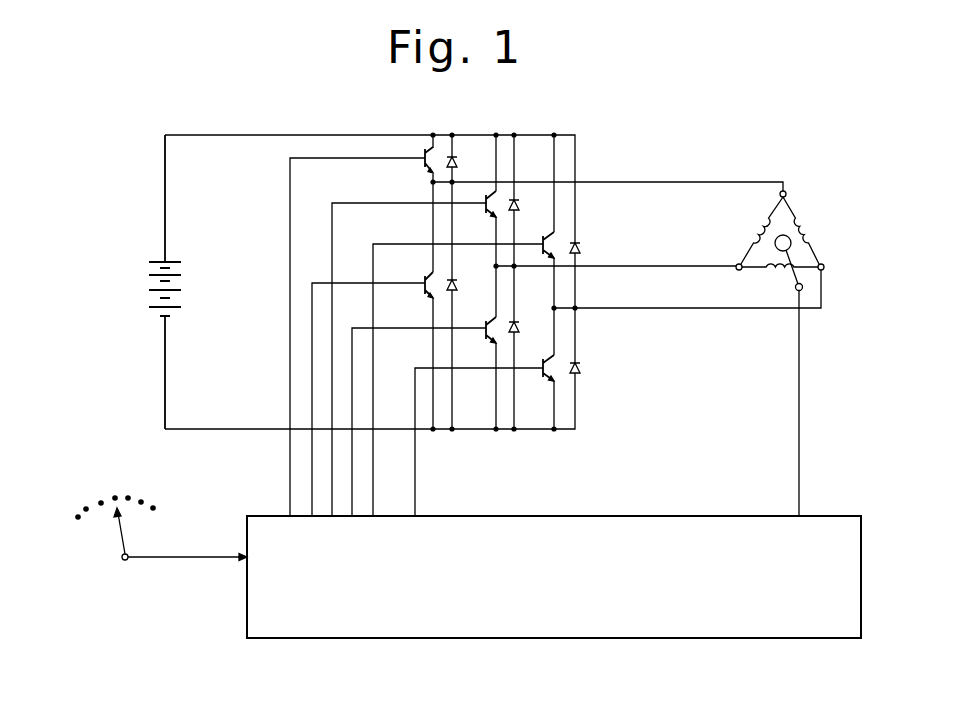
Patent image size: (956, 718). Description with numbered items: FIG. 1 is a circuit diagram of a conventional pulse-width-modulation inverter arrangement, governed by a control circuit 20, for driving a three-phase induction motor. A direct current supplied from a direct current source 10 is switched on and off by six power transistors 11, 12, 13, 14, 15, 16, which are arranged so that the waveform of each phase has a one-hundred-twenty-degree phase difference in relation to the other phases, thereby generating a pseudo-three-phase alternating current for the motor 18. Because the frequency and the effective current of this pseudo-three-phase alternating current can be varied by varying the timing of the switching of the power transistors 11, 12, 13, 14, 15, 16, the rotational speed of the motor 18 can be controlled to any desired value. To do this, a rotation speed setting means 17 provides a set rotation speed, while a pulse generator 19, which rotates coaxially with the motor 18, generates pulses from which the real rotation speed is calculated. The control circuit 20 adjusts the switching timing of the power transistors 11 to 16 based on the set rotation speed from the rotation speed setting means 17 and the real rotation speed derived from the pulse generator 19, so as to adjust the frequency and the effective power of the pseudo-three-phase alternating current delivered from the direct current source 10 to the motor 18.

The direct current source 10 is at (146, 266).
The power transistor 11 is at (423, 165).
The power transistor 12 is at (422, 280).
The power transistor 13 is at (486, 207).
The power transistor 14 is at (484, 322).
The power transistor 15 is at (543, 244).
The power transistor 16 is at (543, 362).
The rotation speed setting means 17 is at (124, 562).
The motor 18 is at (792, 228).
The pulse generator 19 is at (806, 288).
The control circuit 20 is at (626, 515).